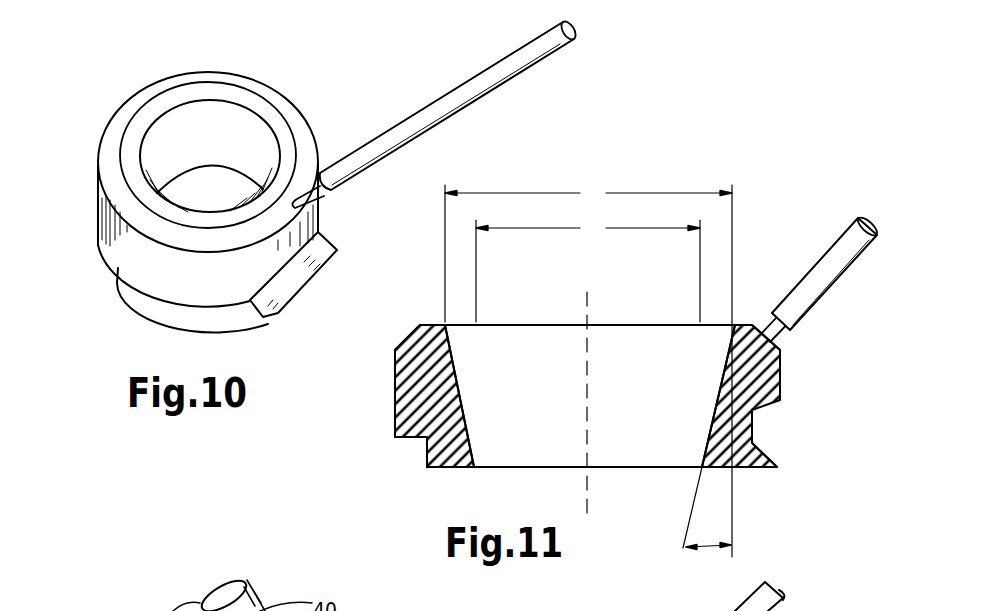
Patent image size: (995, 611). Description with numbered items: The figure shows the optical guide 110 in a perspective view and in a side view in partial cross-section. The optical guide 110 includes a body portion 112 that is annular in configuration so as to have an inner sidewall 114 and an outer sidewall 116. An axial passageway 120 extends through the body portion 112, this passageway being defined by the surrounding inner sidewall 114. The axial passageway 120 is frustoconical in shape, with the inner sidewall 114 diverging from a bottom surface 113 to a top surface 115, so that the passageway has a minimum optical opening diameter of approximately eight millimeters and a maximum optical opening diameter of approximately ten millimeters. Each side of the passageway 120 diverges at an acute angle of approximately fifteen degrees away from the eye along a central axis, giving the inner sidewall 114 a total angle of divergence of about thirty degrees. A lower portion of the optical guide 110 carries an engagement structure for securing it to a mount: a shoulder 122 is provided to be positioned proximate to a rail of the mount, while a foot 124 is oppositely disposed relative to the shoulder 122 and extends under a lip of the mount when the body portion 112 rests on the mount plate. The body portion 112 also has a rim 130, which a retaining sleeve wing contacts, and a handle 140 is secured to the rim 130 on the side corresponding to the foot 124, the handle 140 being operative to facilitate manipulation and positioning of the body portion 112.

In FIG. 10, the optical guide 110 is at (342, 114).
In FIG. 11, the optical guide 110 is at (812, 187).
In FIG. 10, the body portion 112 is at (243, 72).
In FIG. 11, the body portion 112 is at (768, 402).
In FIG. 11, the bottom surface 113 is at (433, 470).
In FIG. 10, the inner sidewall 114 is at (193, 120).
In FIG. 11, the inner sidewall 114 is at (450, 363).
In FIG. 11, the top surface 115 is at (742, 322).
In FIG. 10, the outer sidewall 116 is at (122, 243).
In FIG. 11, the outer sidewall 116 is at (397, 398).
In FIG. 10, the axial passageway 120 is at (237, 137).
In FIG. 11, the axial passageway 120 is at (628, 473).
In FIG. 10, the shoulder 122 is at (113, 268).
In FIG. 11, the shoulder 122 is at (416, 445).
In FIG. 10, the foot 124 is at (288, 288).
In FIG. 11, the foot 124 is at (753, 444).
In FIG. 10, the rim 130 is at (160, 88).
In FIG. 11, the rim 130 is at (412, 336).
In FIG. 10, the handle 140 is at (468, 93).
In FIG. 11, the handle 140 is at (826, 272).